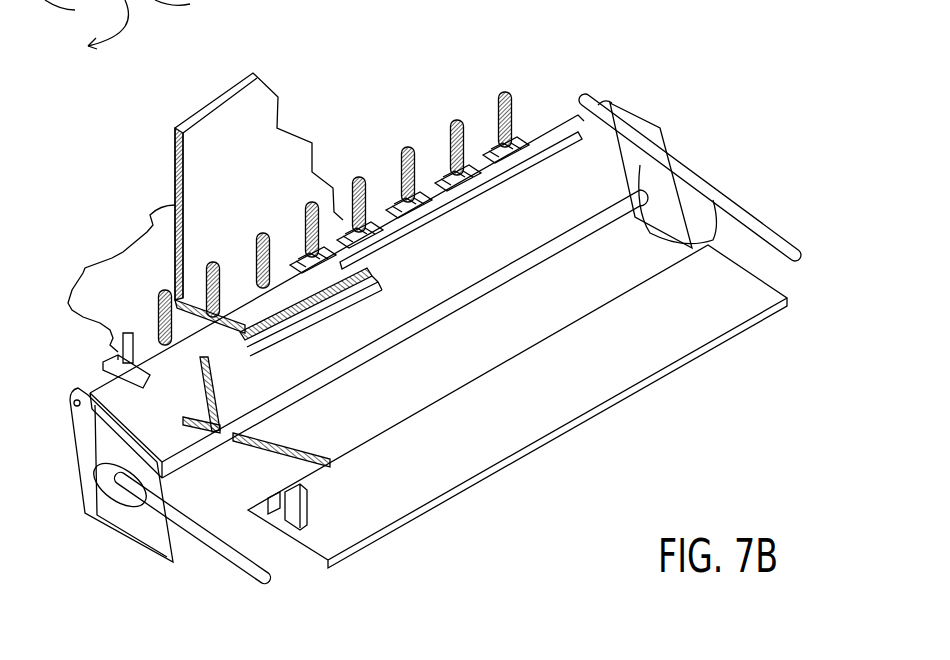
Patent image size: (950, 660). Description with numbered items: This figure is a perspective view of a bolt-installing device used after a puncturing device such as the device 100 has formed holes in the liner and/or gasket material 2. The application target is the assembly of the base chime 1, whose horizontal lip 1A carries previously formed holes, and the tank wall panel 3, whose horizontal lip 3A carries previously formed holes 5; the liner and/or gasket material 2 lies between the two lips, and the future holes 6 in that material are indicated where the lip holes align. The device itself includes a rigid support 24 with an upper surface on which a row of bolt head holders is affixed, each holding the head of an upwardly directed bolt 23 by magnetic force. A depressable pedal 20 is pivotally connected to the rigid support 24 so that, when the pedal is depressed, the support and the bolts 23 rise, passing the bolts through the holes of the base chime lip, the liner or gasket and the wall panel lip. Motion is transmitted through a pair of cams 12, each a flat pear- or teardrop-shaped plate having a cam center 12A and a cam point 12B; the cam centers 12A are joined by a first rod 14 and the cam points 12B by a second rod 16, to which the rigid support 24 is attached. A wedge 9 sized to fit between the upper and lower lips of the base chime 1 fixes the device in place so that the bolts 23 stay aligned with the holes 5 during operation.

The base chime 1 is at (354, 419).
The horizontal lip of the base chime 1A is at (345, 353).
The liner and/or gasket material 2 is at (121, 278).
The tank wall panel 3 is at (259, 203).
The horizontal lip of the tank wall panel 3A is at (377, 268).
The holes 5 is at (253, 280).
The future holes 6 is at (150, 338).
The wedge 9 is at (150, 548).
The cam 12 is at (632, 240).
The cam center 12A is at (733, 218).
The cam point 12B is at (600, 92).
The first rod 14 is at (358, 365).
The second rod 16 is at (82, 377).
The depressable pedal 20 is at (560, 396).
The bolts 23 is at (457, 118).
The rigid support 24 is at (546, 128).
The device 100 is at (677, 57).